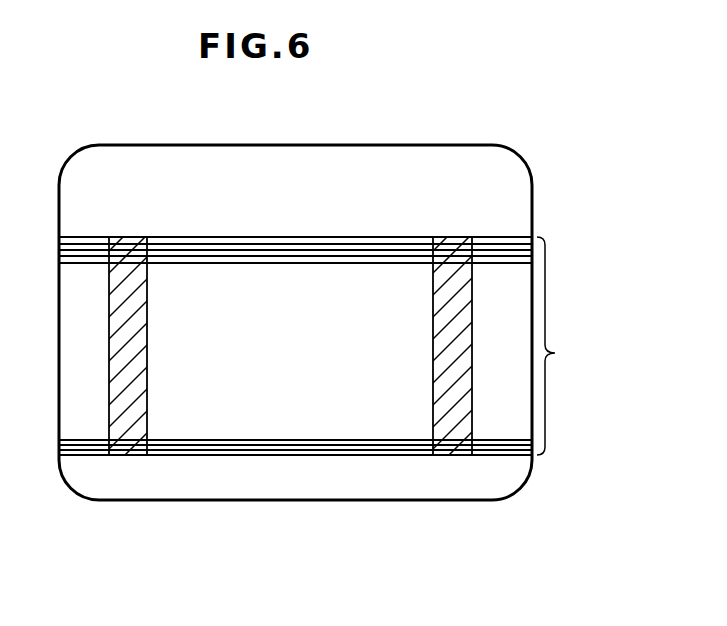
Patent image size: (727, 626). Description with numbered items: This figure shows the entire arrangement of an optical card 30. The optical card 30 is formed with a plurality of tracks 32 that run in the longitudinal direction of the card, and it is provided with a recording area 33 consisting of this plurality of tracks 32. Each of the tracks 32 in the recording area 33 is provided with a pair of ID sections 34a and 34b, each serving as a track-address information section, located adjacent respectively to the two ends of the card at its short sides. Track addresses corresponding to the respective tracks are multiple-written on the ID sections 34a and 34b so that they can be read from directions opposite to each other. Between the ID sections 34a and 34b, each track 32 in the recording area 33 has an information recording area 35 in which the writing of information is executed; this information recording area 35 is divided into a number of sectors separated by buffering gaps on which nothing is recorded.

The optical card 30 is at (251, 503).
The tracks 32 is at (497, 237).
The recording area 33 is at (563, 346).
The ID section 34a is at (108, 425).
The ID section 34b is at (466, 414).
The information recording area 35 is at (389, 428).